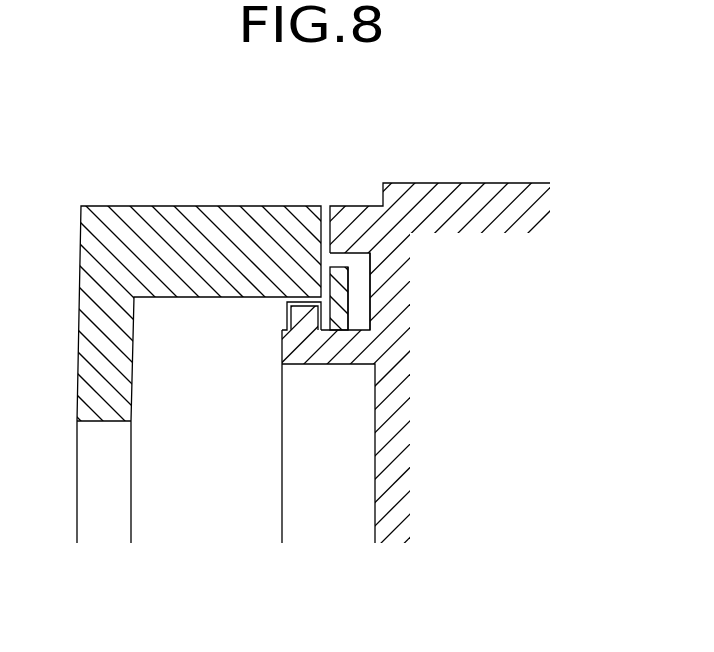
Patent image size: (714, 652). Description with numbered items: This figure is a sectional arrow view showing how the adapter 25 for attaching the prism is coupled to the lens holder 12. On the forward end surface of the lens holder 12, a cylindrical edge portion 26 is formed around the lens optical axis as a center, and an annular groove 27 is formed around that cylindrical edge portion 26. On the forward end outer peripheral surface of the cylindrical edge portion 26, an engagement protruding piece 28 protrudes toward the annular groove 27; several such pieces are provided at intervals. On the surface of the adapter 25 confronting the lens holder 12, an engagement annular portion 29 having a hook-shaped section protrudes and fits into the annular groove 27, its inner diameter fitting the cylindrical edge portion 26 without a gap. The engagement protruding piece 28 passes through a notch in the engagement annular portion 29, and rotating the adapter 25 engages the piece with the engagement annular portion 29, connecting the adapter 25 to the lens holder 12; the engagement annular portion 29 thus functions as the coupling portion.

The lens holder 12 is at (490, 183).
The adapter for attaching the prism 25 is at (190, 186).
The cylindrical edge portion 26 is at (303, 354).
The annular groove 27 is at (357, 287).
The engagement protruding piece 28 is at (287, 316).
The engagement annular portion 29 is at (352, 310).